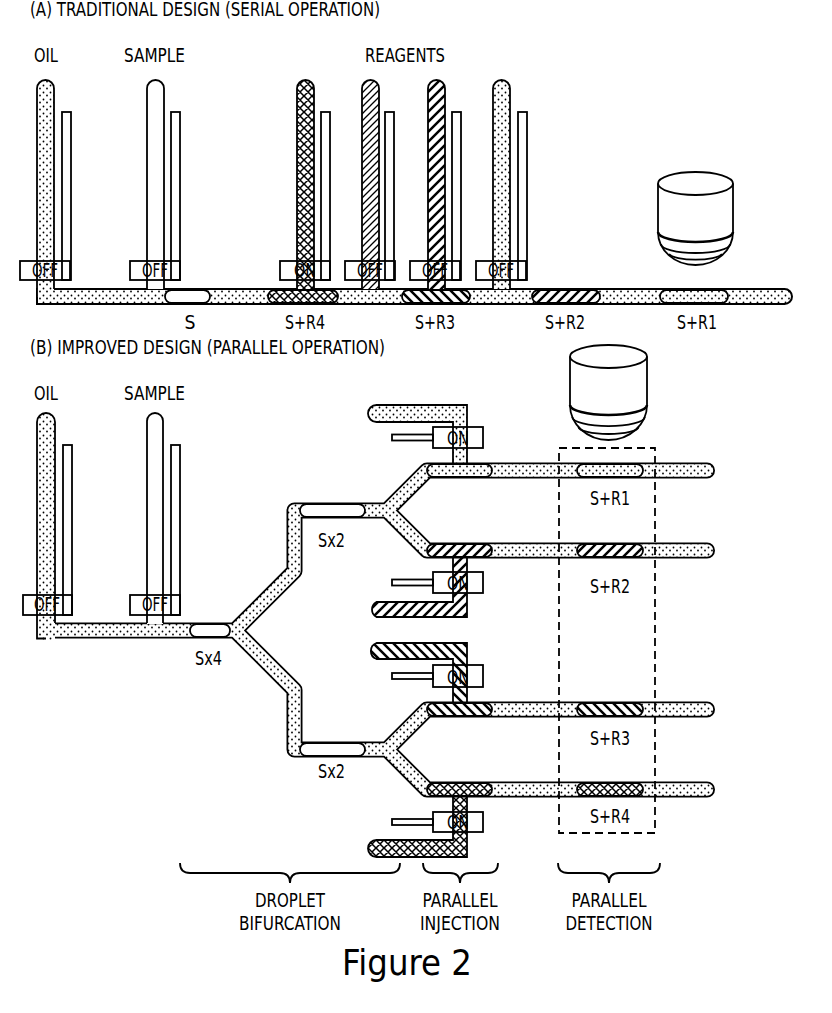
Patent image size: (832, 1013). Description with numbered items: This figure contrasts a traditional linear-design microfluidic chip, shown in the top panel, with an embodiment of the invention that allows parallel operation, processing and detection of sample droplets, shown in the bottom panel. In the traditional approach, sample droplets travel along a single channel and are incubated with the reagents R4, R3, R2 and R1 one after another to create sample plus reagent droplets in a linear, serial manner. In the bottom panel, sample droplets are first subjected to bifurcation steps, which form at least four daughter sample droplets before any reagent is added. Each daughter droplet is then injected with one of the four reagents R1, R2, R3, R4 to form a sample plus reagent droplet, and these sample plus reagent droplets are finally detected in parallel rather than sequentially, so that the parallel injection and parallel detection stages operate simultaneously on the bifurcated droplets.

The reagent R1 is at (438, 275).
The reagent R2 is at (407, 351).
The reagent R3 is at (402, 395).
The reagent R4 is at (382, 470).